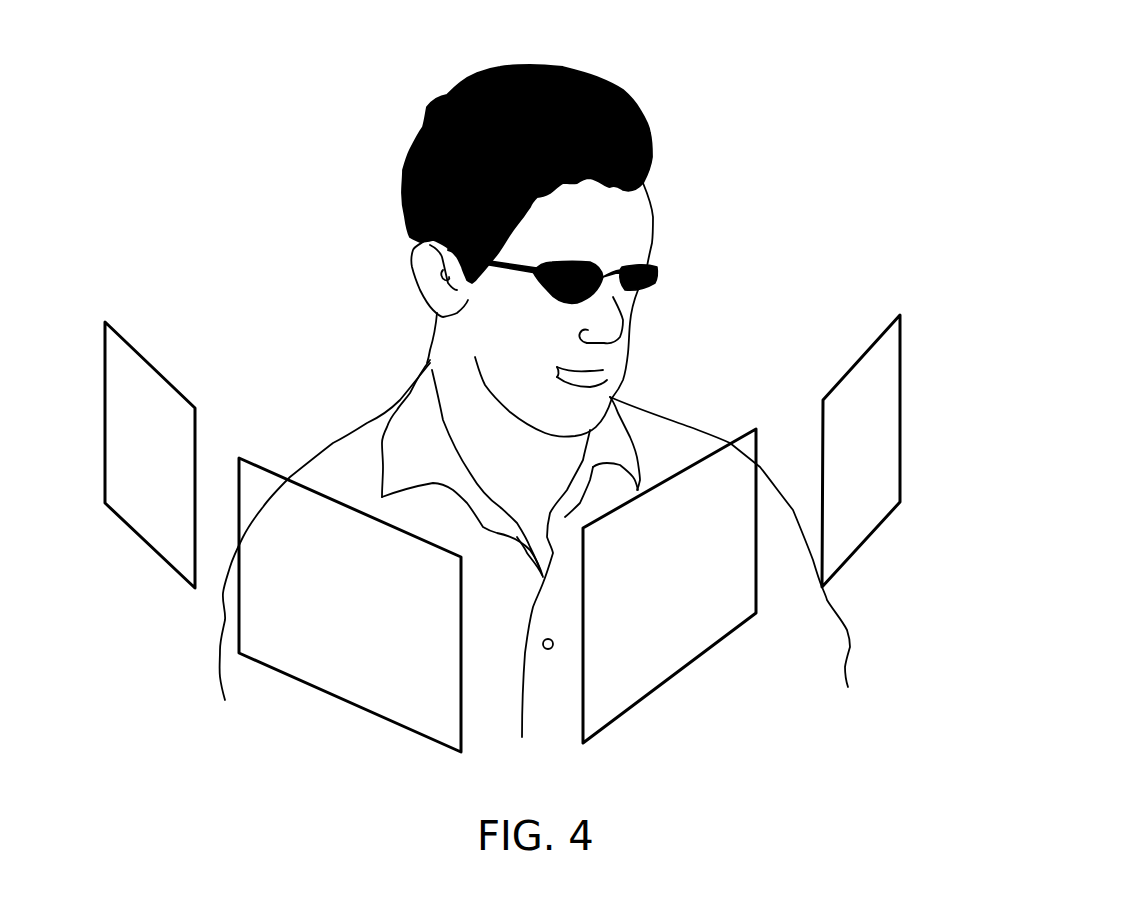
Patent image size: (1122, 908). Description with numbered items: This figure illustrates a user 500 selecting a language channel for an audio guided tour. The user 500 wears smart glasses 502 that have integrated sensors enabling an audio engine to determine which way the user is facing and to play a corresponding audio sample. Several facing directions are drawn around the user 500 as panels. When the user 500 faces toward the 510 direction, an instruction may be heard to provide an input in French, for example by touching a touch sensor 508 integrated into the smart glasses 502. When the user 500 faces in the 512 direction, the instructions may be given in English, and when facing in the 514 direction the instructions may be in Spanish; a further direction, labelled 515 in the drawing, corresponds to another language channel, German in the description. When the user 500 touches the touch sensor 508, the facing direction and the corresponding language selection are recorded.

The user 500 is at (665, 107).
The smart glasses 502 is at (672, 270).
The touch sensor 508 is at (448, 250).
The direction 510 is at (902, 417).
The direction 512 is at (752, 630).
The direction 514 is at (305, 645).
The display panel (left) 515 is at (155, 480).